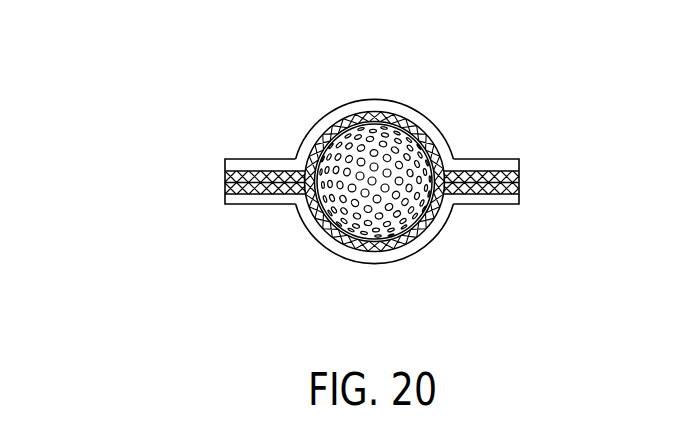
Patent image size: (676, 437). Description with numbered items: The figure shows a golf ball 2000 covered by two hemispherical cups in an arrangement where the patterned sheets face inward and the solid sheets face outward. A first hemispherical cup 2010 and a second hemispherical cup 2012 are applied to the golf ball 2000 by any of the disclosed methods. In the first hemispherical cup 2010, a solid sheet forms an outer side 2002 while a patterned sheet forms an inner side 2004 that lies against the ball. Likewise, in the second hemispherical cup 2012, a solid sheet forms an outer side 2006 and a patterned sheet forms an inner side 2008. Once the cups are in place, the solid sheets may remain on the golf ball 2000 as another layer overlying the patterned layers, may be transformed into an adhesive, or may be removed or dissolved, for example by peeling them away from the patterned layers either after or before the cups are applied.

The golf ball 2000 is at (397, 138).
The outer side of first hemispherical cup 2002 is at (360, 100).
The inner side of first hemispherical cup 2004 is at (328, 132).
The outer side of second hemispherical cup 2006 is at (333, 249).
The inner side of second hemispherical cup 2008 is at (390, 246).
The first hemispherical cup 2010 is at (221, 180).
The second hemispherical cup 2012 is at (522, 182).